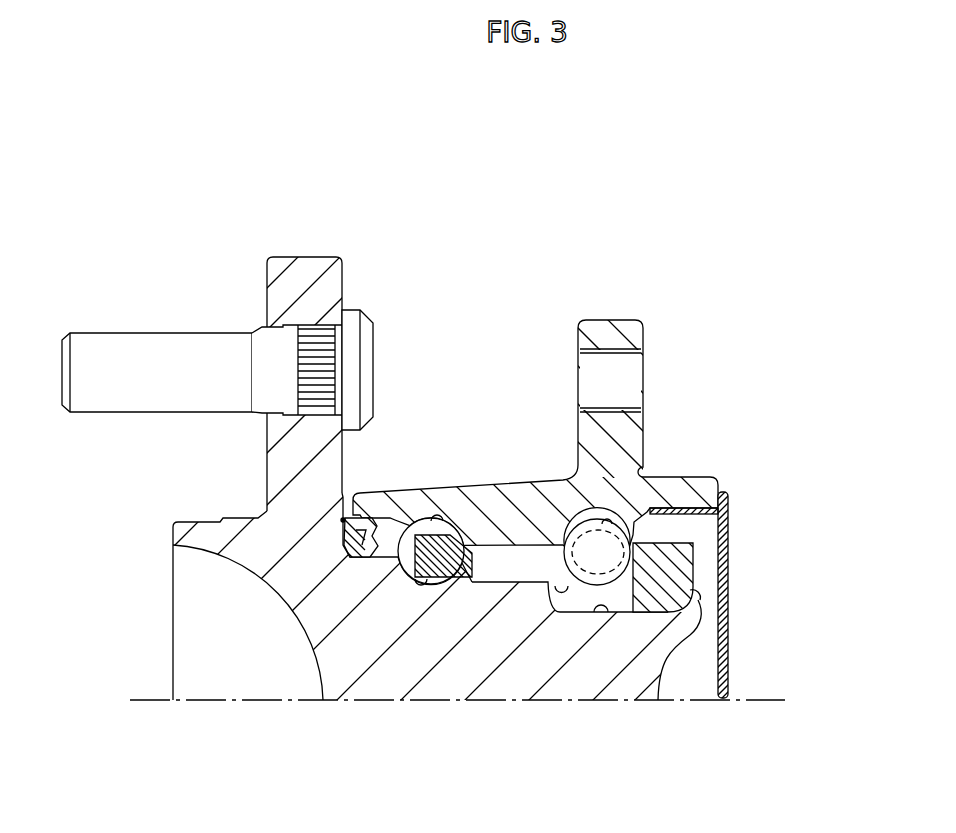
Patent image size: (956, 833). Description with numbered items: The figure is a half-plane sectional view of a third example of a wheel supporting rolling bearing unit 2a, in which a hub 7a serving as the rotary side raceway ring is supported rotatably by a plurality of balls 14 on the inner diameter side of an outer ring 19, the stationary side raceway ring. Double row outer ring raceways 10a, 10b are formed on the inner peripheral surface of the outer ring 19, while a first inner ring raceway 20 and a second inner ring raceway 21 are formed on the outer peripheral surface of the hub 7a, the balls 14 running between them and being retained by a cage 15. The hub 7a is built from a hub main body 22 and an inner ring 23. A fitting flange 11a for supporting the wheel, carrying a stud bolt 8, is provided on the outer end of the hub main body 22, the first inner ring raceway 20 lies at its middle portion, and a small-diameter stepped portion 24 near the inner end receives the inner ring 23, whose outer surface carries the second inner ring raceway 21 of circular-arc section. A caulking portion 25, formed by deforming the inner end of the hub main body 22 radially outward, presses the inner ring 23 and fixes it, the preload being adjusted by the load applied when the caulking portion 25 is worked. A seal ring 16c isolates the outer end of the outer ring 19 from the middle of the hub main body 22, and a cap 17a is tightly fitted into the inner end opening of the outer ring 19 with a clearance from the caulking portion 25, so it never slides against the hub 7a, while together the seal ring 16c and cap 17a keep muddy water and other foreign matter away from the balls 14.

The wheel supporting rolling bearing unit 2a is at (678, 343).
The hub 7a is at (237, 525).
The stud bolt 8 is at (177, 357).
The outer ring raceway 10a is at (432, 517).
The outer ring raceway 10b is at (632, 500).
The fitting flange 11a is at (307, 270).
The balls 14 is at (415, 523).
The cage 15 is at (468, 582).
The seal ring 16c is at (357, 557).
The cap 17a is at (723, 537).
The outer ring 19 is at (482, 497).
The first inner ring raceway 20 is at (427, 590).
The second inner ring raceway 21 is at (658, 700).
The hub main body 22 is at (366, 657).
The inner ring 23 is at (678, 558).
The small-diameter stepped portion 24 is at (601, 613).
The caulking portion 25 is at (699, 595).